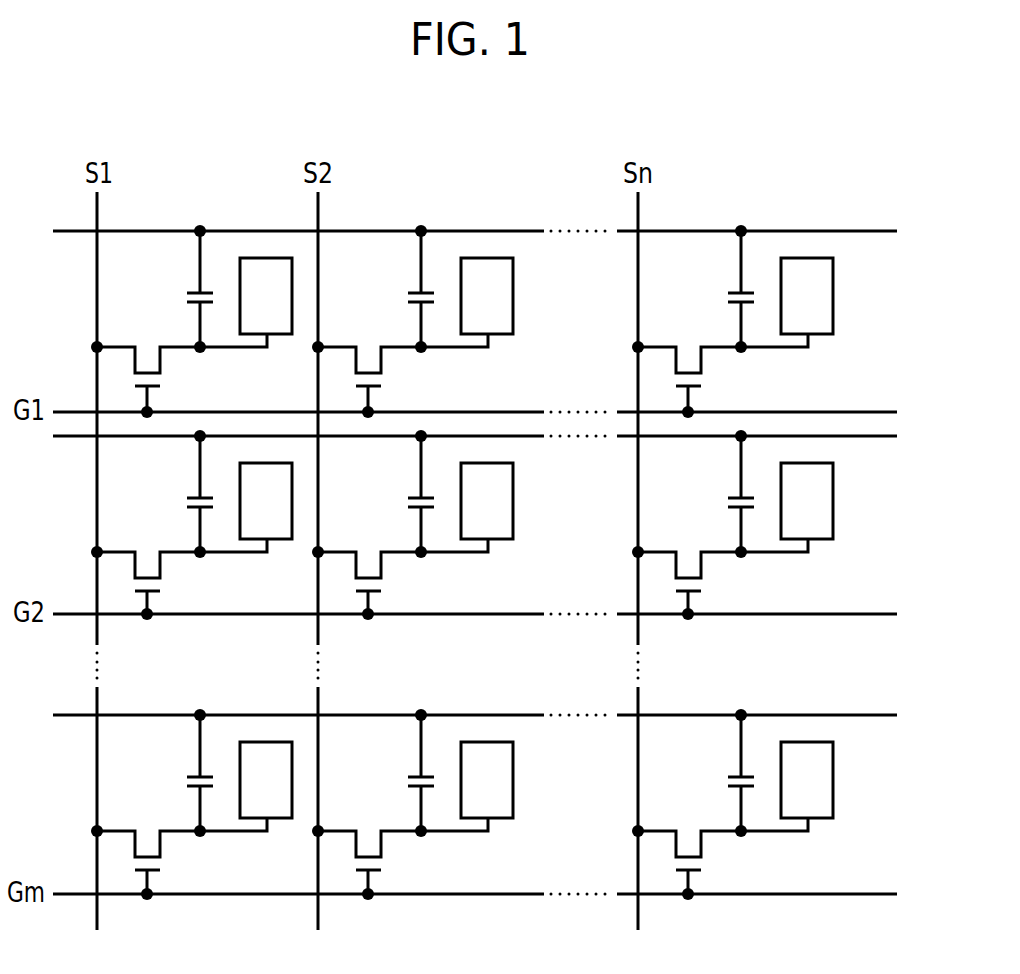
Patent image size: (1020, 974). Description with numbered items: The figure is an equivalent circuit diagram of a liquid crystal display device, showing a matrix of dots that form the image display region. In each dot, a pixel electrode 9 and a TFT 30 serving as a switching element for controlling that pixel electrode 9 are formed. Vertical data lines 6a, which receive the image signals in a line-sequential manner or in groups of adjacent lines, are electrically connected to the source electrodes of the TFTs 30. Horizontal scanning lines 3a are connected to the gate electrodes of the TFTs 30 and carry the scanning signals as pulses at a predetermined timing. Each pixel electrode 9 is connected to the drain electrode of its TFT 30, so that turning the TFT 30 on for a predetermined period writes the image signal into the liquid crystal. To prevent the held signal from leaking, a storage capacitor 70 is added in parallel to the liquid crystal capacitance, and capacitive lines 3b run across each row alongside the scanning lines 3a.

The data line 6a is at (684, 193).
The capacitive line 3b is at (902, 743).
The scanning line 3a is at (878, 894).
The storage capacitor 70 is at (187, 297).
The TFT 30 is at (157, 380).
The pixel electrode 9 is at (478, 258).